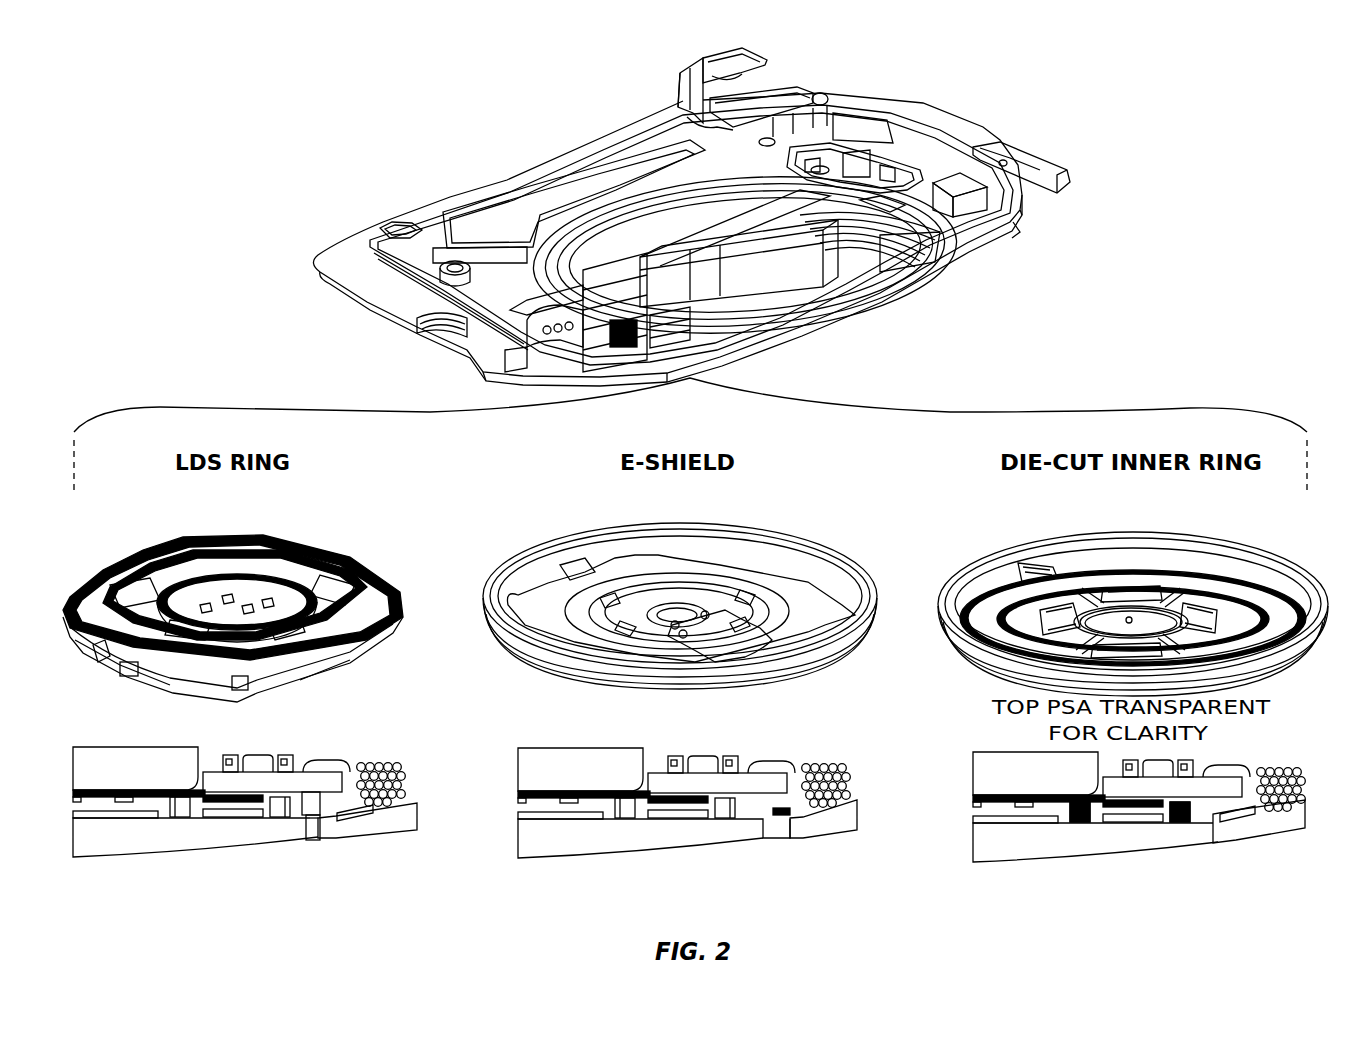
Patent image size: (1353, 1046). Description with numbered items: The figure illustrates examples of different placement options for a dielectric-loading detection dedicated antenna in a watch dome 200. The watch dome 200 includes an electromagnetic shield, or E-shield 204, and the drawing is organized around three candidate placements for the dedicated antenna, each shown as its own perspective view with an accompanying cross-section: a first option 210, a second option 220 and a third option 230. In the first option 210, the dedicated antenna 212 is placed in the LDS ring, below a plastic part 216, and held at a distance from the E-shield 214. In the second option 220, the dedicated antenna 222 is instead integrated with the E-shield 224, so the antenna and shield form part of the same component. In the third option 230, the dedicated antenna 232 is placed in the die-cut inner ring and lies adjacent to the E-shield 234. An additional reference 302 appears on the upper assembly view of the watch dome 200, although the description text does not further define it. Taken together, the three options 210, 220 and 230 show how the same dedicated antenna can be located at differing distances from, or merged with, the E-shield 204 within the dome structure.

The watch dome 200 is at (360, 84).
The module / clip 302 is at (882, 52).
The electromagnetic shield (E-shield) 204 is at (920, 262).
The first option 210 is at (360, 512).
The dedicated antenna 212 is at (150, 610).
The E-shield 214 is at (355, 815).
The plastic part 216 is at (125, 595).
The second option 220 is at (855, 512).
The dedicated antenna 222 is at (608, 605).
The E-shield 224 is at (760, 610).
The third option 230 is at (1261, 512).
The dedicated antenna 232 is at (1225, 612).
The E-shield 234 is at (1140, 600).